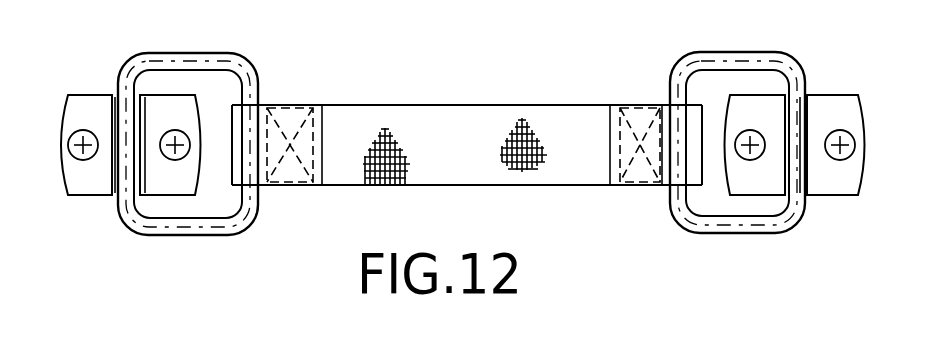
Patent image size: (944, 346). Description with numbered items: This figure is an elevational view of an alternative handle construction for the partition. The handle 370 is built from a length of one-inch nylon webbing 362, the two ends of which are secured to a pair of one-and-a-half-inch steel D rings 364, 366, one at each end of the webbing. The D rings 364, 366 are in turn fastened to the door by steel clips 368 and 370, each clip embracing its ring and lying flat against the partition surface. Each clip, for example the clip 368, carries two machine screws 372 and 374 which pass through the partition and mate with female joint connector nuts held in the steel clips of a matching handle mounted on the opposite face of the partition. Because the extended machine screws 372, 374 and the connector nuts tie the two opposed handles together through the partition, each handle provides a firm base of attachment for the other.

The nylon webbing 362 is at (552, 172).
The steel ring 364 is at (250, 72).
The steel ring 366 is at (738, 53).
The steel clip 368 is at (93, 183).
The handle 370 is at (535, 90).
The machine screw 372 is at (83, 130).
The machine screw 374 is at (183, 157).